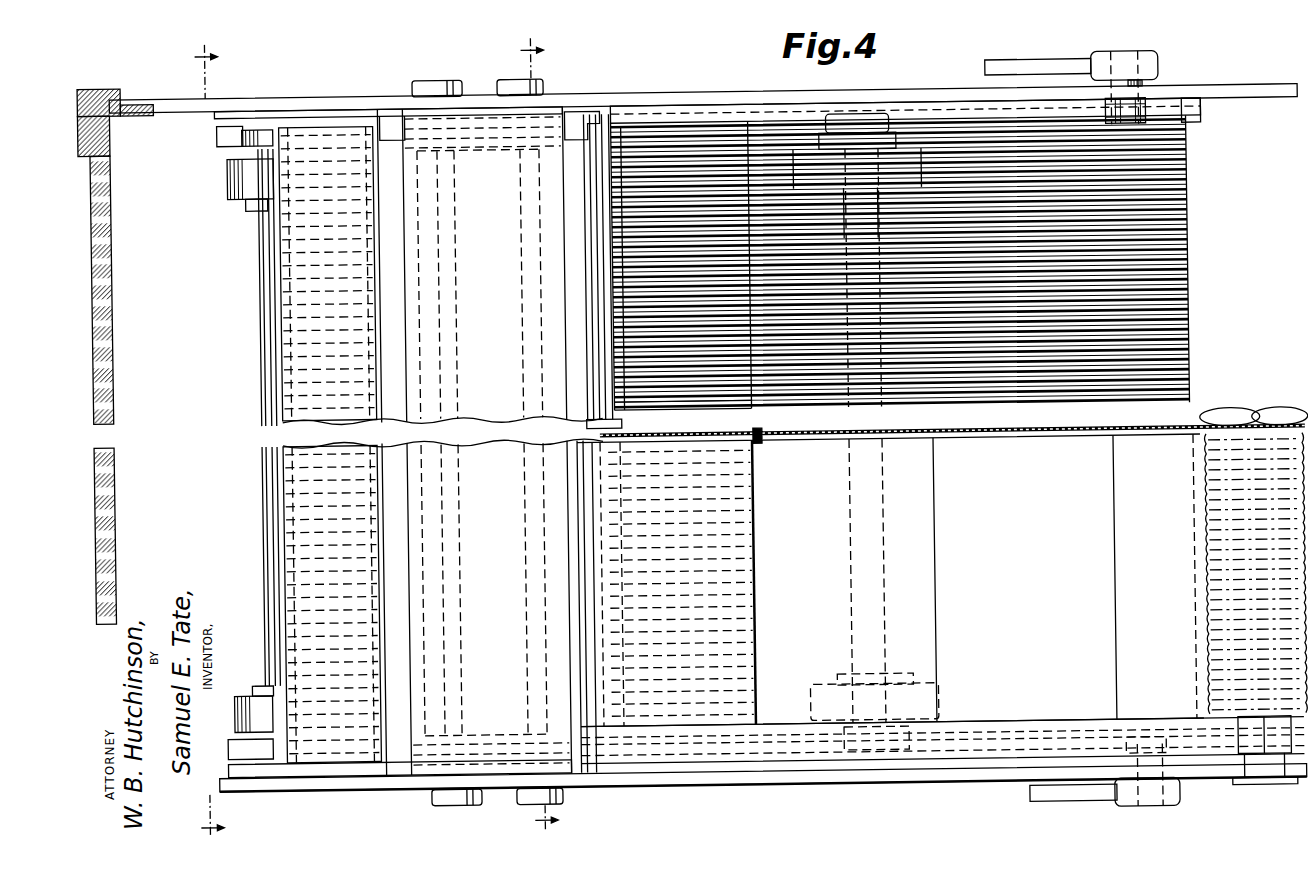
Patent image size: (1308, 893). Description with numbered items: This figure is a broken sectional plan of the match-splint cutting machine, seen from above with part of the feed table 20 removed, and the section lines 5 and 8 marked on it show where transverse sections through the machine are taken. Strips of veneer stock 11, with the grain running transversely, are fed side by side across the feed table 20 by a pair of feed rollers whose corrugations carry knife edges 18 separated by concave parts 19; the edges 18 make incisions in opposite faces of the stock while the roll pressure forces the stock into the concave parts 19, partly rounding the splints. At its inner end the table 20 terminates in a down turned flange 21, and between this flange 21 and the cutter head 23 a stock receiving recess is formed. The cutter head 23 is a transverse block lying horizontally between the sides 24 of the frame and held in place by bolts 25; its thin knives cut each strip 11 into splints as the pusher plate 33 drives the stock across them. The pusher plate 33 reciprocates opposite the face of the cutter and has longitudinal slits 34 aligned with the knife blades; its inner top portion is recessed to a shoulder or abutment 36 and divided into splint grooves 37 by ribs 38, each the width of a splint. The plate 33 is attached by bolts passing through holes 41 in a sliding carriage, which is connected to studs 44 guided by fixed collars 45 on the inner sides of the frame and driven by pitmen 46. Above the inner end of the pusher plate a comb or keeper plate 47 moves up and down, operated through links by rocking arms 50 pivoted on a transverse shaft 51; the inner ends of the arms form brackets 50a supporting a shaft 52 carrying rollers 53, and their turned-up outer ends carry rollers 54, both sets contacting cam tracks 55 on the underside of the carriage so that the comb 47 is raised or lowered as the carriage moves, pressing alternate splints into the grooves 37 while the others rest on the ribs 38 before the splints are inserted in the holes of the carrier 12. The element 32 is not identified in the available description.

The section line 5- 5 is at (552, 435).
The section line 8- 8 is at (221, 441).
The stock strips 11 is at (890, 580).
The carrier 12 is at (117, 147).
The knife edges 18 is at (1205, 450).
The concave part 19 is at (1203, 511).
The feed table 20 is at (930, 433).
The down turned flange 21 is at (760, 447).
The cutter head 23 is at (422, 265).
The sides of the frame 24 is at (649, 100).
The bolts 25 is at (519, 77).
The lower coil 32 is at (533, 634).
The pusher plate 33 is at (1191, 273).
The longitudinal slits 34 is at (1182, 233).
The shoulder or abutment 36 is at (751, 395).
The splint grooves 37 is at (718, 400).
The ribs 38 is at (679, 390).
The holes 41 is at (681, 583).
The studs 44 is at (1150, 88).
The fixed collars 45 is at (1152, 116).
The pitmen 46 is at (1033, 64).
The comb or keeper plate 47 is at (290, 421).
The rocking arms 50 is at (409, 133).
The brackets 50a is at (246, 137).
The transverse shaft 51 is at (589, 418).
The shaft 52 is at (262, 290).
The rollers 53 is at (231, 180).
The rollers 54 is at (935, 686).
The cam tracks 55 is at (1006, 693).